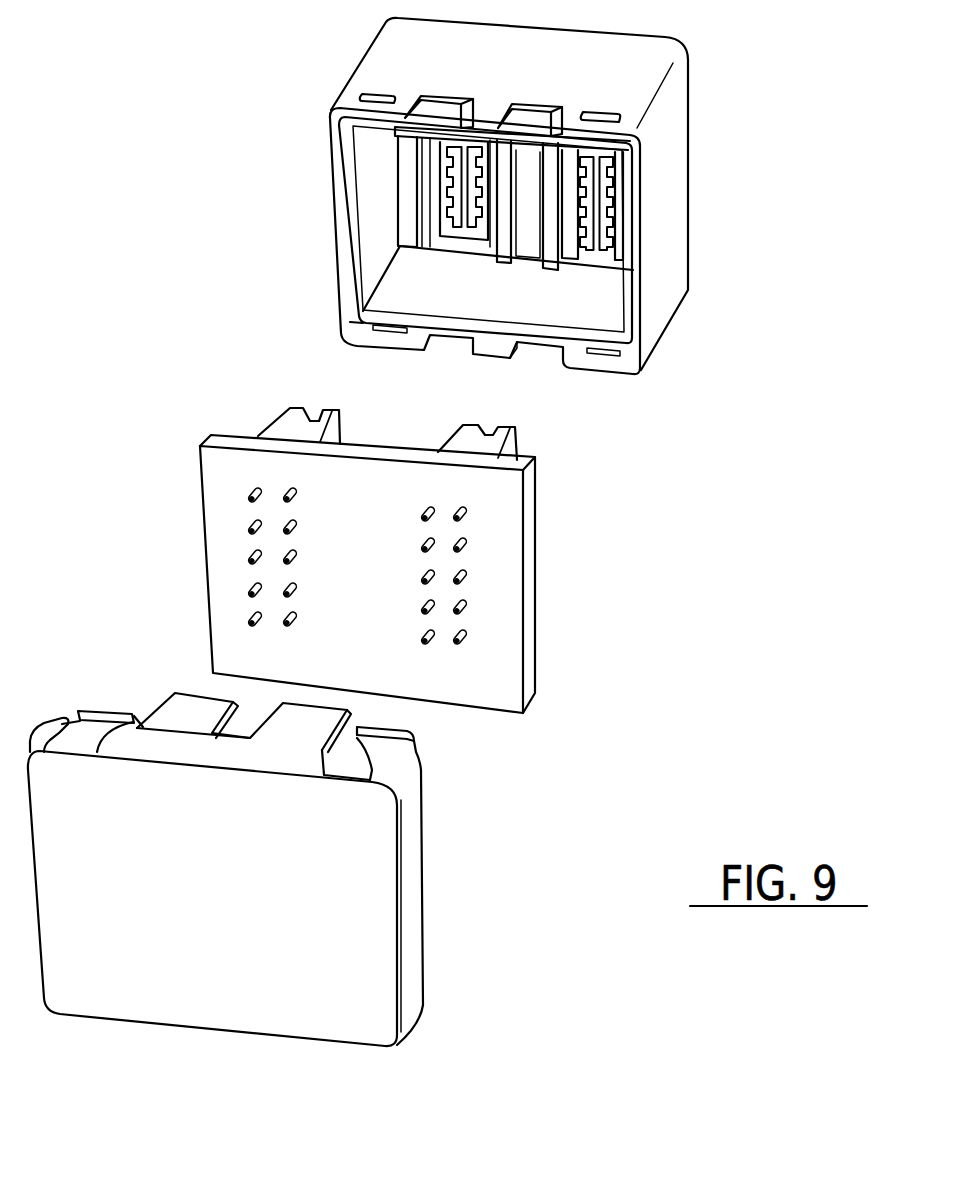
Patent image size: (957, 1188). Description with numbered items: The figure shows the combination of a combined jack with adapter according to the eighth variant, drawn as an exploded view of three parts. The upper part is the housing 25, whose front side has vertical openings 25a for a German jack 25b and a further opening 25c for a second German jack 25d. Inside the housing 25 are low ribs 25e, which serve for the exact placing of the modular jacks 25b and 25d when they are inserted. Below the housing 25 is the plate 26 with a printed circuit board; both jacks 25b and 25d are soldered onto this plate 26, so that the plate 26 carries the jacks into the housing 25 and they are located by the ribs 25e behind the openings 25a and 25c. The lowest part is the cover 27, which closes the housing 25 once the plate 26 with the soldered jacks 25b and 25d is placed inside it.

The housing 25 is at (672, 265).
The vertical openings 25a is at (453, 170).
The German jack 25b is at (280, 424).
The opening 25c is at (600, 210).
The German jack 25d is at (513, 443).
The low ribs 25e is at (508, 214).
The plate with printed circuit board 26 is at (502, 598).
The cover 27 is at (395, 895).